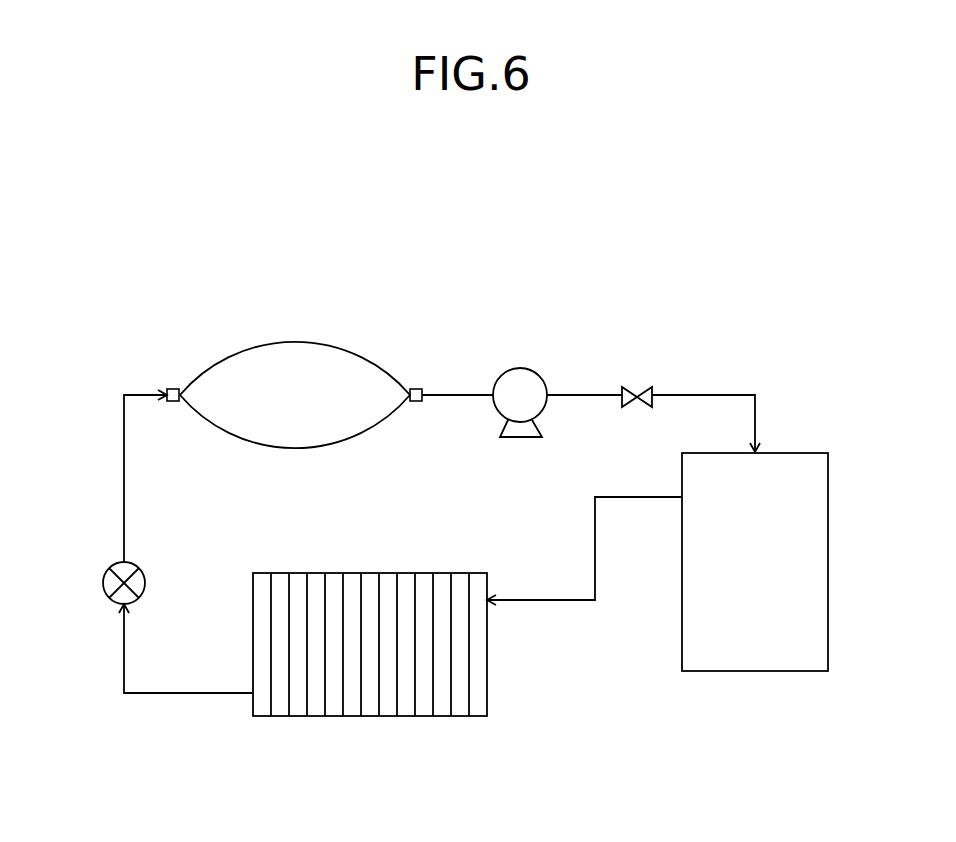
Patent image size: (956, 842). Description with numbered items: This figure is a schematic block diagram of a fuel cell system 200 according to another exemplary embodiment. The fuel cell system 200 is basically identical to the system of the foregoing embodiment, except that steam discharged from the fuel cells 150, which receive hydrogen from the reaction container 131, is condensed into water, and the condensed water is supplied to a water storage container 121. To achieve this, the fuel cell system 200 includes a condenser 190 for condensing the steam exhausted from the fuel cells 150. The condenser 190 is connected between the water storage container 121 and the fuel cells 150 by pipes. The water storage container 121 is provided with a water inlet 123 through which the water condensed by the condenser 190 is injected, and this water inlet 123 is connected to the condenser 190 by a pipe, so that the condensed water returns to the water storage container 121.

The fuel cell system 200 is at (502, 242).
The water storage container 121 is at (341, 343).
The water inlet 123 is at (172, 388).
The reaction container 131 is at (755, 672).
The fuel cells 150 is at (366, 717).
The condenser 190 is at (103, 576).